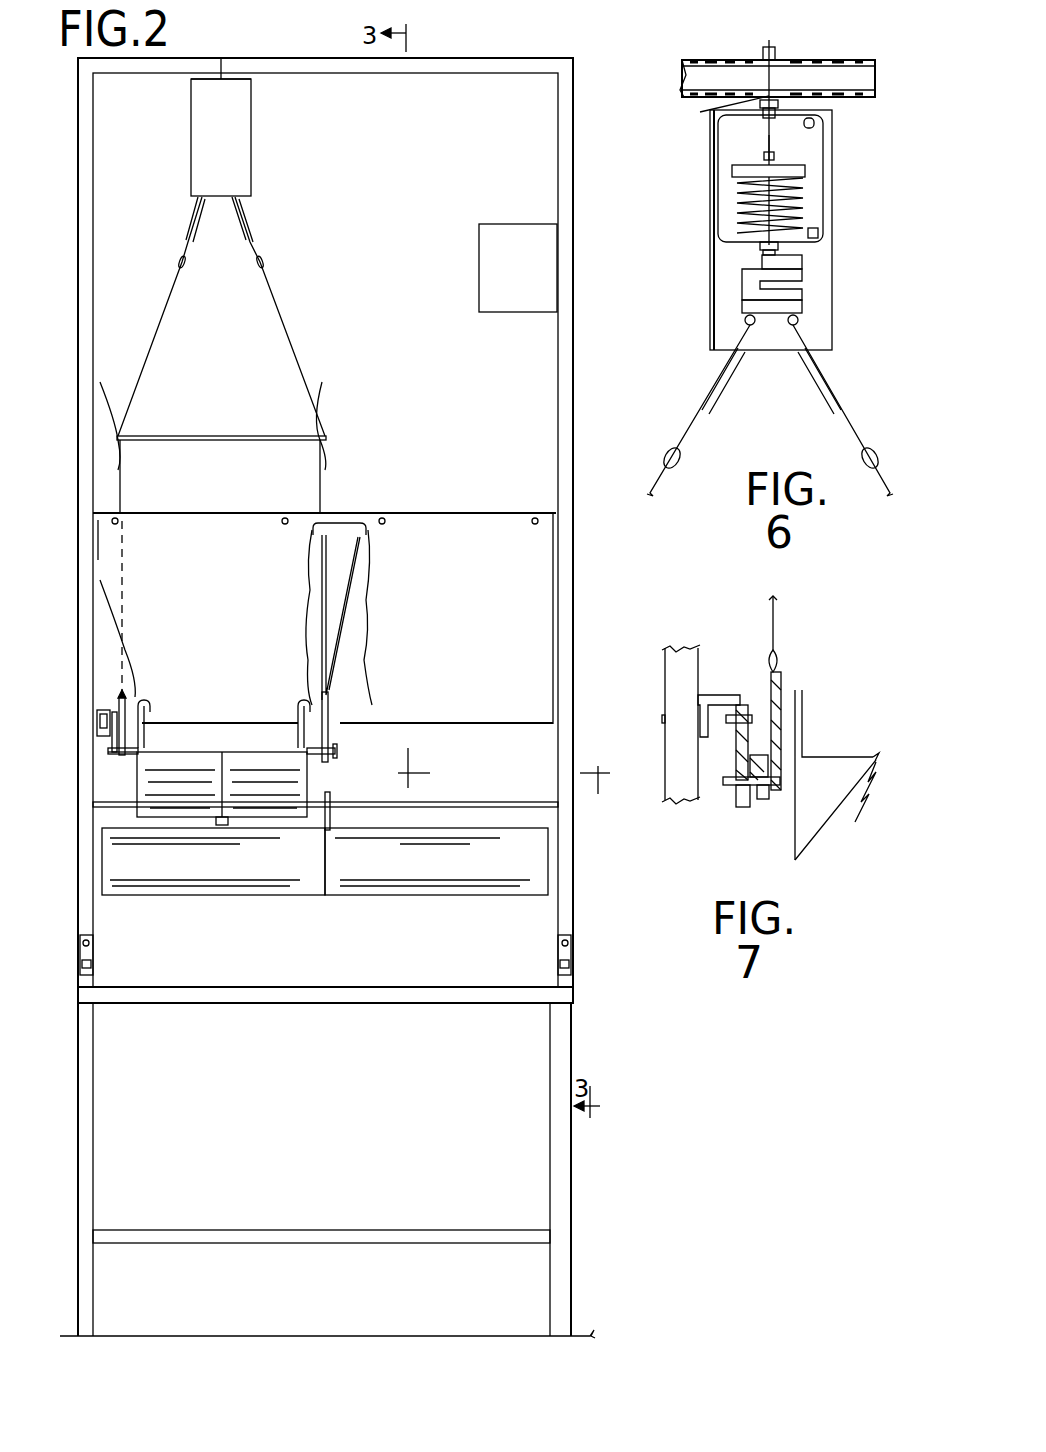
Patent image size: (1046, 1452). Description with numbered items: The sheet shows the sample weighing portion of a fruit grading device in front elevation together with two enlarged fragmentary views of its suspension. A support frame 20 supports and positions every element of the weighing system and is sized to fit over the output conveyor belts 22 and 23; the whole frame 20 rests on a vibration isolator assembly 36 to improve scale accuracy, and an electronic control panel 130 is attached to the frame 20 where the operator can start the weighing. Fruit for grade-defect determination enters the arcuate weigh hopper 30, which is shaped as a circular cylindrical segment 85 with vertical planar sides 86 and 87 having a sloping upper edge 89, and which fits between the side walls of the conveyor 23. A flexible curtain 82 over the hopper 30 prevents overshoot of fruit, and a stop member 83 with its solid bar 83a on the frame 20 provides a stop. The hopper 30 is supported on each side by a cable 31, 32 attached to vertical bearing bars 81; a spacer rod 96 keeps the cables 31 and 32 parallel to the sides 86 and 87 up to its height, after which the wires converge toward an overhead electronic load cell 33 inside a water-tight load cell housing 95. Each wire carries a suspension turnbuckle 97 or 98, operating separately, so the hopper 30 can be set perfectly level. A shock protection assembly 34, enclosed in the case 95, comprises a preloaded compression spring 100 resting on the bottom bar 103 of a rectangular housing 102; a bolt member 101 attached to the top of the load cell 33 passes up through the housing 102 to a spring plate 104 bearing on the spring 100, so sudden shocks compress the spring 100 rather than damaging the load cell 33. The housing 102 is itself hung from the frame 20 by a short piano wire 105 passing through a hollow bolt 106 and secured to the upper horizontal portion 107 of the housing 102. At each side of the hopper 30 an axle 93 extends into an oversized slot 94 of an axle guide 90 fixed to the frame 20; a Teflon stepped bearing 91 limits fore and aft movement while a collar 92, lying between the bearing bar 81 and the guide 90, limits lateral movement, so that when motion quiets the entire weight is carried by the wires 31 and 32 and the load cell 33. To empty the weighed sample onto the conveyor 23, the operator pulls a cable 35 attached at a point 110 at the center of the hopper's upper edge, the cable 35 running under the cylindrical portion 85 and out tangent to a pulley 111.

In FIG. 2, the support frame 20 is at (550, 393).
In FIG. 6, the support frame 20 is at (708, 48).
In FIG. 7, the support frame 20 is at (672, 684).
In FIG. 2, the output conveyor belt 22 is at (420, 872).
In FIG. 2, the output conveyor belt 23 is at (226, 872).
In FIG. 2, the weigh hopper 30 is at (190, 786).
In FIG. 7, the weigh hopper 30 is at (822, 748).
In FIG. 2, the cable 31 is at (138, 380).
In FIG. 6, the cable 31 is at (660, 488).
In FIG. 7, the cable 31 is at (770, 635).
In FIG. 2, the cable 32 is at (335, 416).
In FIG. 6, the cable 32 is at (882, 478).
In FIG. 2, the load cell 33 is at (238, 141).
In FIG. 6, the load cell 33 is at (795, 275).
In FIG. 6, the shock protection assembly 34 is at (705, 188).
In FIG. 2, the cable 35 is at (224, 772).
In FIG. 2, the vibration isolator assembly 36 is at (100, 959).
In FIG. 2, the bearing support 81 is at (134, 730).
In FIG. 7, the bearing support 81 is at (782, 676).
In FIG. 2, the flexible curtain 82 is at (222, 557).
In FIG. 2, the wedge 83 is at (326, 597).
In FIG. 2, the solid bar 83a is at (340, 527).
In FIG. 2, the circular cylindrical segment 85 is at (180, 803).
In FIG. 2, the vertical planar side 86 is at (138, 795).
In FIG. 2, the vertical planar side 87 is at (316, 800).
In FIG. 2, the sloping upper edge 89 is at (156, 695).
In FIG. 2, the axle guide 90 is at (112, 762).
In FIG. 7, the axle guide 90 is at (740, 790).
In FIG. 7, the stepped bearing 91 is at (738, 782).
In FIG. 2, the collar 92 is at (105, 750).
In FIG. 7, the collar 92 is at (762, 800).
In FIG. 2, the axle 93 is at (334, 752).
In FIG. 7, the axle 93 is at (780, 775).
In FIG. 7, the slot 94 is at (742, 807).
In FIG. 2, the load cell housing 95 is at (242, 175).
In FIG. 6, the load cell housing 95 is at (832, 145).
In FIG. 2, the spacer rod 96 is at (252, 437).
In FIG. 2, the suspension turnbuckle 97 is at (190, 228).
In FIG. 6, the suspension turnbuckle 97 is at (712, 385).
In FIG. 2, the suspension turnbuckle 98 is at (258, 226).
In FIG. 6, the suspension turnbuckle 98 is at (850, 362).
In FIG. 6, the compression spring 100 is at (736, 196).
In FIG. 6, the bolt member 101 is at (762, 248).
In FIG. 6, the rectangular housing 102 is at (728, 143).
In FIG. 6, the bottom bar 103 is at (818, 233).
In FIG. 6, the spring plate 104 is at (800, 170).
In FIG. 6, the piano wire 105 is at (710, 115).
In FIG. 6, the hollow bolt 106 is at (764, 33).
In FIG. 6, the upper horizontal portion 107 is at (810, 126).
In FIG. 2, the attachment point 110 is at (222, 752).
In FIG. 2, the pulley 111 is at (222, 825).
In FIG. 2, the electronic control panel 130 is at (540, 302).